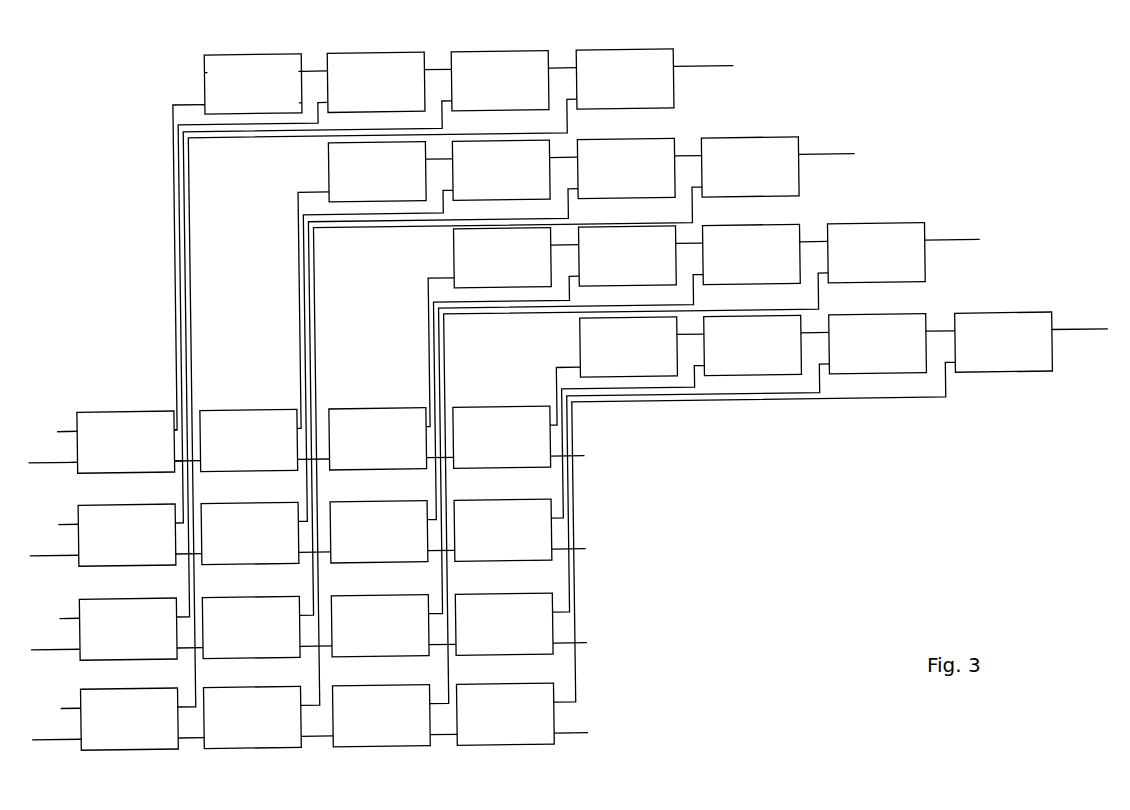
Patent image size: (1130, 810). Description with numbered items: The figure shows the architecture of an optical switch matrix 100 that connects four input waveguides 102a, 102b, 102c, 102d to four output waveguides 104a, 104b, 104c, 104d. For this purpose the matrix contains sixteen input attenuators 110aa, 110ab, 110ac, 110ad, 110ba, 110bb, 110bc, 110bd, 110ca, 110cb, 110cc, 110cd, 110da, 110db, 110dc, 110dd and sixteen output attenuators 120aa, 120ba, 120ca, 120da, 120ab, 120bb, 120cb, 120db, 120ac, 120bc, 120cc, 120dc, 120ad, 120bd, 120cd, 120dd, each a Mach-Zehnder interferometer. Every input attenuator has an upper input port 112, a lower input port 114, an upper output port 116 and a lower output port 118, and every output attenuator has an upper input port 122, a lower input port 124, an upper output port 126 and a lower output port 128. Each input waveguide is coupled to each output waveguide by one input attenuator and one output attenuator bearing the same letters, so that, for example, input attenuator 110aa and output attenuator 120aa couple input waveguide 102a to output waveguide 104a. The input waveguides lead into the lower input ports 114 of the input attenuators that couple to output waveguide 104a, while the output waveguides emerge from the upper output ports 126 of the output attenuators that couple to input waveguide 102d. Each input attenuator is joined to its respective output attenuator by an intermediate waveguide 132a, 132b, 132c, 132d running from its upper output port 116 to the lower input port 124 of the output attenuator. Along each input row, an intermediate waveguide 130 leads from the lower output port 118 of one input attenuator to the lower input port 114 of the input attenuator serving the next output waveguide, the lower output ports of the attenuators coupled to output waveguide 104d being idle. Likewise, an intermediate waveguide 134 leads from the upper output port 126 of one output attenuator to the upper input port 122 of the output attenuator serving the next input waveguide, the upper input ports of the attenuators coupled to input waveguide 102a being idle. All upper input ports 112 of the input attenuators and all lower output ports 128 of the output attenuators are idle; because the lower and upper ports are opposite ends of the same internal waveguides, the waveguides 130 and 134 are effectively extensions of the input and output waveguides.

The optical switch matrix 100 is at (137, 171).
The input waveguide 102a is at (31, 461).
The input waveguide 102b is at (31, 554).
The input waveguide 102c is at (31, 648).
The input waveguide 102d is at (31, 738).
The output waveguide 104a is at (696, 73).
The output waveguide 104b is at (817, 162).
The output waveguide 104c is at (938, 250).
The output waveguide 104d is at (1061, 341).
The input attenuator 110aa is at (152, 450).
The input attenuator 110ab is at (275, 450).
The input attenuator 110ac is at (404, 450).
The input attenuator 110ad is at (528, 450).
The input attenuator 110ba is at (152, 543).
The input attenuator 110bb is at (275, 543).
The input attenuator 110bc is at (404, 543).
The input attenuator 110bd is at (528, 543).
The input attenuator 110ca is at (152, 637).
The input attenuator 110cb is at (275, 637).
The input attenuator 110cc is at (404, 637).
The input attenuator 110cd is at (528, 637).
The input attenuator 110da is at (152, 727).
The input attenuator 110db is at (275, 727).
The input attenuator 110dc is at (404, 727).
The input attenuator 110dd is at (528, 727).
The upper input port 112 is at (83, 424).
The lower input port 114 is at (89, 461).
The upper output port 116 is at (158, 423).
The lower output port 118 is at (161, 460).
The output attenuator 120aa is at (284, 94).
The output attenuator 120ba is at (407, 94).
The output attenuator 120ca is at (531, 94).
The output attenuator 120da is at (656, 94).
The output attenuator 120ab is at (407, 184).
The output attenuator 120bb is at (531, 184).
The output attenuator 120cb is at (656, 184).
The output attenuator 120db is at (780, 184).
The output attenuator 120ac is at (531, 272).
The output attenuator 120bc is at (656, 272).
The output attenuator 120cc is at (780, 272).
The output attenuator 120dc is at (905, 272).
The output attenuator 120ad is at (656, 362).
The output attenuator 120bd is at (780, 362).
The output attenuator 120cd is at (905, 362).
The output attenuator 120dd is at (1031, 362).
The upper input port 122 is at (220, 67).
The lower input port 124 is at (219, 104).
The upper output port 126 is at (283, 66).
The lower output port 128 is at (285, 103).
The intermediate waveguide 130 is at (179, 461).
The intermediate waveguide 132a is at (165, 252).
The intermediate waveguide 132b is at (294, 291).
The intermediate waveguide 132c is at (419, 333).
The intermediate waveguide 132d is at (545, 385).
The intermediate waveguide 134 is at (318, 72).